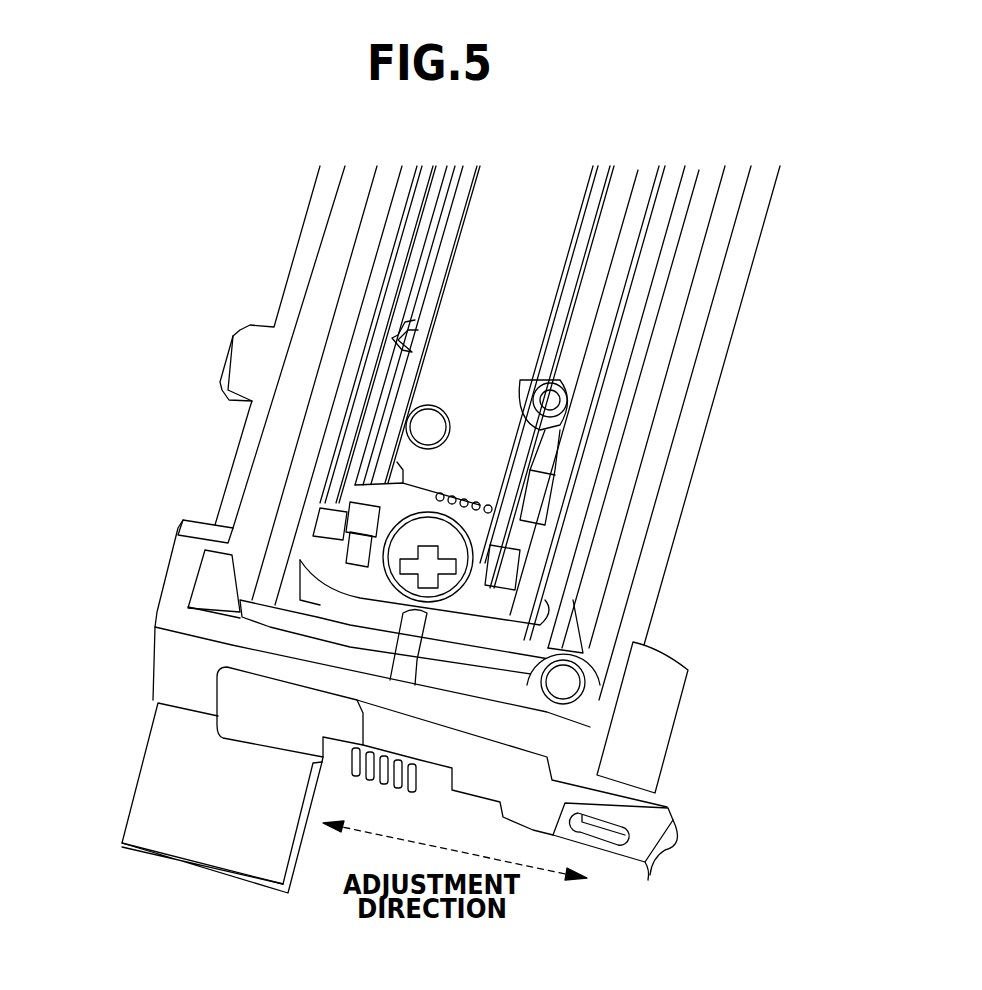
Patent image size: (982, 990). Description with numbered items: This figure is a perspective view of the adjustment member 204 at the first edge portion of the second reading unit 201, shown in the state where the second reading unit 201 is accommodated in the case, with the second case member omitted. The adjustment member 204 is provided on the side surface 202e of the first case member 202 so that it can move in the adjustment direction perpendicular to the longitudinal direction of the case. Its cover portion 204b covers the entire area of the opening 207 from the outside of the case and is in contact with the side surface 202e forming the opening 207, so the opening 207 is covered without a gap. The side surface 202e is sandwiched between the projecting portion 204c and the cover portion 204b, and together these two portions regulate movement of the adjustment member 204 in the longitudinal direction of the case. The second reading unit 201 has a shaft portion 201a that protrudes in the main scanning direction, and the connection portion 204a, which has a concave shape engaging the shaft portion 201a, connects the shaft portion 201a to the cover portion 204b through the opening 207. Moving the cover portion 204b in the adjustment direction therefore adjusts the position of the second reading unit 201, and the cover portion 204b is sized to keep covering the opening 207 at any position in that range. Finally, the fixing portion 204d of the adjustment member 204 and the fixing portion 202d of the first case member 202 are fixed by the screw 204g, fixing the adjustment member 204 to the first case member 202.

The second reading unit 201 is at (510, 324).
The shaft portion 201a is at (375, 657).
The first case member 202 is at (685, 455).
The fixing portion 202d is at (648, 740).
The side surface 202e is at (190, 668).
The adjustment member 204 is at (273, 752).
The connection portion 204a is at (585, 625).
The cover portion 204b is at (250, 723).
The projecting portion 204c is at (240, 612).
The fixing portion 204d is at (655, 840).
The screw 204g is at (622, 868).
The opening 207 is at (580, 686).